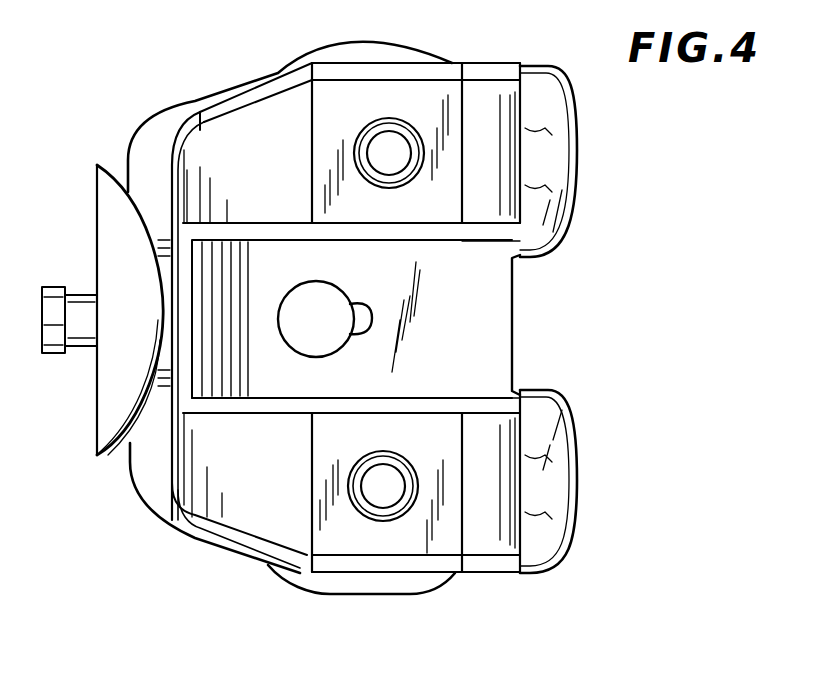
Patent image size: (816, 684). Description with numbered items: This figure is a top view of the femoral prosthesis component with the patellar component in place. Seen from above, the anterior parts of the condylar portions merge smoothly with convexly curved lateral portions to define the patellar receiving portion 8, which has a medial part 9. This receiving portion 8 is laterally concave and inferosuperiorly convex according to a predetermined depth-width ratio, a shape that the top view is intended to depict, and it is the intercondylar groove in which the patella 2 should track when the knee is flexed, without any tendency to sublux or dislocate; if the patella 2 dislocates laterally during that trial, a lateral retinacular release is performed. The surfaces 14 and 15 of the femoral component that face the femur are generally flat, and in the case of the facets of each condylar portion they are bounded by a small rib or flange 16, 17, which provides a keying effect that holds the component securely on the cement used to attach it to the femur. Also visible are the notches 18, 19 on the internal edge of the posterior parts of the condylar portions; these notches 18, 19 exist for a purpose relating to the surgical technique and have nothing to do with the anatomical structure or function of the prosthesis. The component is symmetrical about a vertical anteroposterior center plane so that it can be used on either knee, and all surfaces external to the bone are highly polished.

The patella 2 is at (97, 211).
The patellar receiving portion 8 is at (128, 178).
The medial part 9 is at (162, 312).
The surface 14 is at (437, 538).
The surface 15 is at (445, 106).
The rib or flange 16 is at (399, 566).
The rib or flange 17 is at (412, 75).
The notch 18 is at (383, 487).
The notch 19 is at (389, 154).